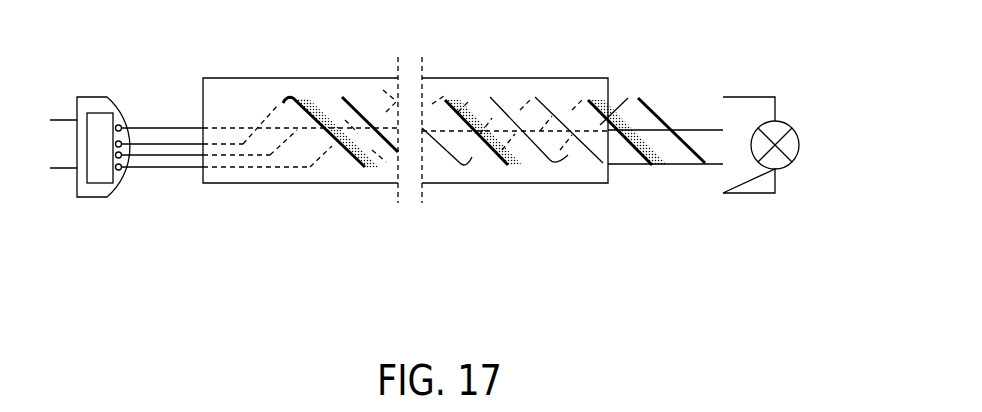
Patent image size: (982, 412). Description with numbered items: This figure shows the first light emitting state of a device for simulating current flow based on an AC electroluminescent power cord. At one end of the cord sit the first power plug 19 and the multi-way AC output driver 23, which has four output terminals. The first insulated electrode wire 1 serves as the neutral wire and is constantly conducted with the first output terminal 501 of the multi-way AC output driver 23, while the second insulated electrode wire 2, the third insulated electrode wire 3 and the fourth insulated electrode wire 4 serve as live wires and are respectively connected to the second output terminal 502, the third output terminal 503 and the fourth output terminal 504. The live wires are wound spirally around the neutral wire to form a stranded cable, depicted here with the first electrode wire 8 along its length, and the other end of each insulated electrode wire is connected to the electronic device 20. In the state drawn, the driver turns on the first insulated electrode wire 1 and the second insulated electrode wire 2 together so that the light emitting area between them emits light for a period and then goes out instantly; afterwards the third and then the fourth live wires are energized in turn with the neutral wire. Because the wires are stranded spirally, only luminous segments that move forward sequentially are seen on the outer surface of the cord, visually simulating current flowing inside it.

The first power plug 19 is at (87, 97).
The multi-way AC output driver 23 is at (93, 157).
The first output terminal of the multi-way AC output driver 501 is at (121, 126).
The second output terminal of the multi-way AC output driver 502 is at (121, 142).
The third output terminal of the multi-way AC output driver 503 is at (124, 157).
The fourth output terminal of the multi-way AC output driver 504 is at (121, 170).
The first insulated electrode wire 1 is at (218, 128).
The second insulated electrode wire 2 is at (307, 97).
The first electrode wire 8 is at (328, 103).
The third insulated electrode wire 3 is at (360, 107).
The fourth insulated electrode wire 4 is at (450, 99).
The electronic device 20 is at (788, 122).